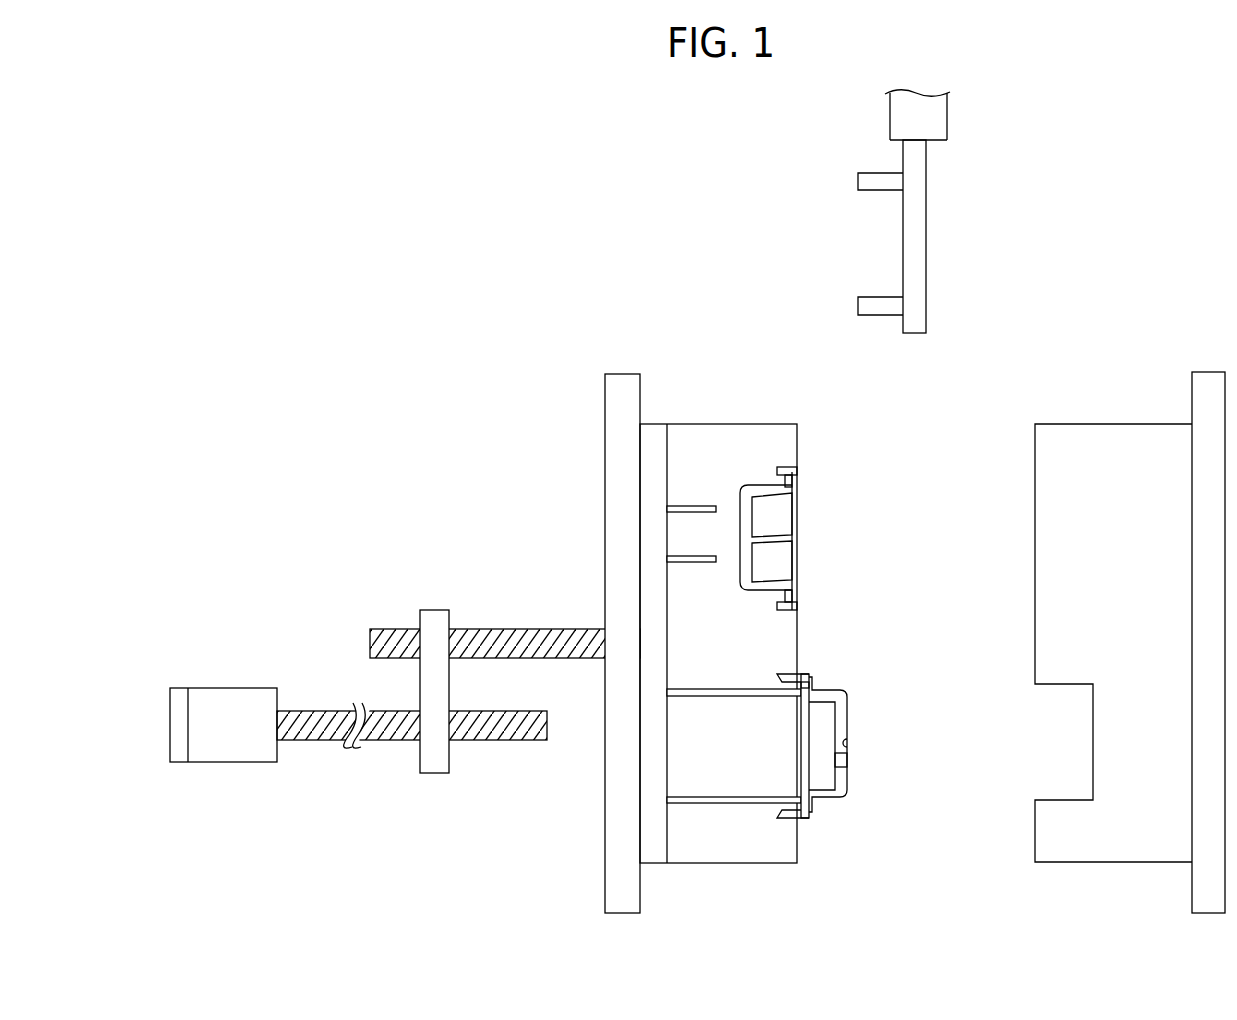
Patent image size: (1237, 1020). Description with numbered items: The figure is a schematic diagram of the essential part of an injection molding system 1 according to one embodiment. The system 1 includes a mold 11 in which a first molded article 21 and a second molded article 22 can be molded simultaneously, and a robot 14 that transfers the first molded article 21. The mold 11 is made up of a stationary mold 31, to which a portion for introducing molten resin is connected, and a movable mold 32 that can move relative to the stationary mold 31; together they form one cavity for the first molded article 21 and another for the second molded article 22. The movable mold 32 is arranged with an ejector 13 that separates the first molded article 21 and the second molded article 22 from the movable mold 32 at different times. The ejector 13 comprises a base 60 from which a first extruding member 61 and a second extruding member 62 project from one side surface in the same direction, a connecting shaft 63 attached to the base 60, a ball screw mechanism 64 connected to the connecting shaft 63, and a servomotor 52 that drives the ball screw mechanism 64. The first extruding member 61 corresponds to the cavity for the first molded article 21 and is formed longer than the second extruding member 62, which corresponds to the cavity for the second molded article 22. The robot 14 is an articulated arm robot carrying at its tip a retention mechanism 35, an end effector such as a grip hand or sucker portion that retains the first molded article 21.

The injection molding system 1 is at (412, 276).
The mold 11 is at (1110, 328).
The ejector 13 is at (514, 528).
The robot 14 is at (935, 123).
The first molded article 21 is at (840, 787).
The second molded article 22 is at (797, 468).
The stationary mold 31 is at (1137, 432).
The movable mold 32 is at (748, 437).
The retention mechanism 35 is at (920, 235).
The servomotor 52 is at (238, 702).
The base 60 is at (655, 622).
The first extruding member 61 is at (723, 692).
The second extruding member 62 is at (690, 559).
The connecting shaft 63 is at (483, 632).
The ball screw mechanism 64 is at (485, 756).